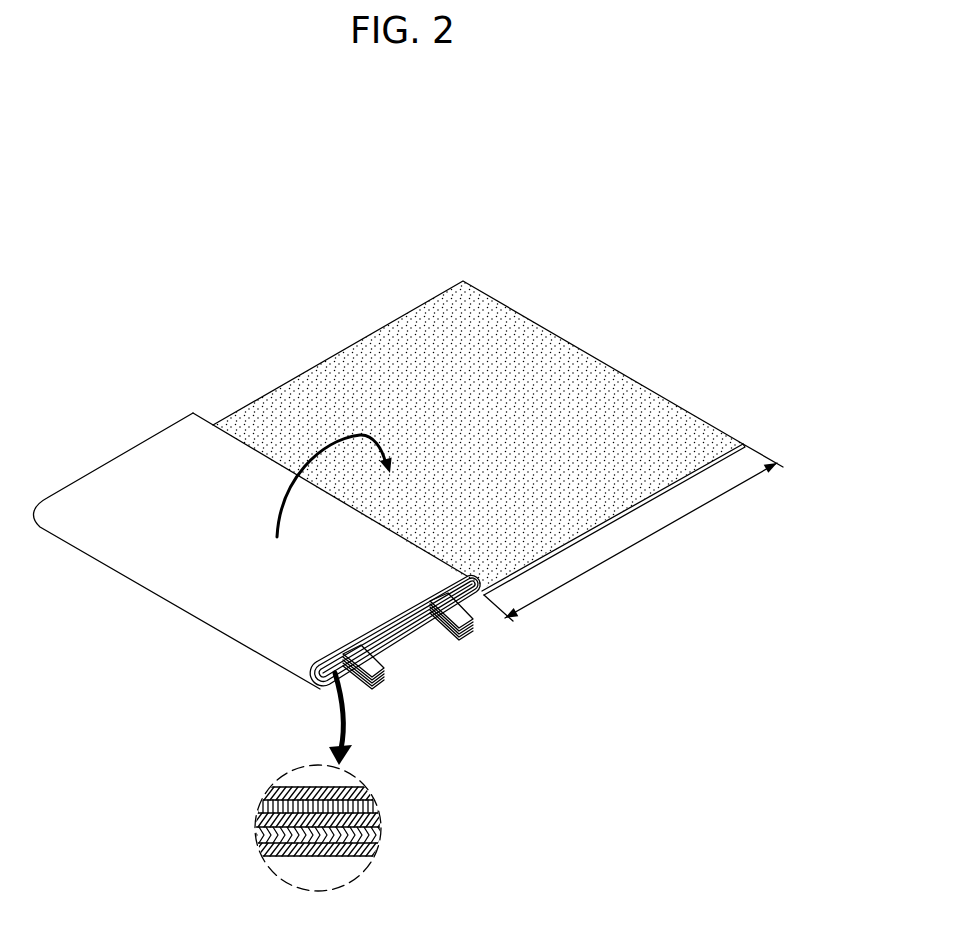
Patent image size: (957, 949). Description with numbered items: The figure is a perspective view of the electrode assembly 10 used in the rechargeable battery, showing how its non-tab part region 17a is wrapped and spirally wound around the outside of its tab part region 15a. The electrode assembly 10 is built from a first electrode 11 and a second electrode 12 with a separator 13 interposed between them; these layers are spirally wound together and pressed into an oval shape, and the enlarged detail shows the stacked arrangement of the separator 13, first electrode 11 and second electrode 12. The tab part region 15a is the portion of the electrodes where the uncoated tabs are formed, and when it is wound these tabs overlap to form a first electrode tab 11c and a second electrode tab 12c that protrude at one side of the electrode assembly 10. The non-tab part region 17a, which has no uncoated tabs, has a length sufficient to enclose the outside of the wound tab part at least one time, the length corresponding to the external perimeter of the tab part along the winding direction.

The electrode assembly 10 is at (408, 471).
The first electrode 11 is at (265, 807).
The second electrode 12 is at (258, 835).
The separator 13 is at (270, 793).
The first electrode tab 11c is at (468, 622).
The second electrode tab 12c is at (383, 664).
The tab part region 15a is at (147, 477).
The non-tab part region 17a is at (538, 373).